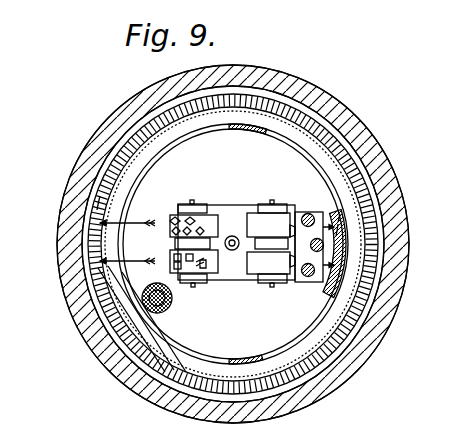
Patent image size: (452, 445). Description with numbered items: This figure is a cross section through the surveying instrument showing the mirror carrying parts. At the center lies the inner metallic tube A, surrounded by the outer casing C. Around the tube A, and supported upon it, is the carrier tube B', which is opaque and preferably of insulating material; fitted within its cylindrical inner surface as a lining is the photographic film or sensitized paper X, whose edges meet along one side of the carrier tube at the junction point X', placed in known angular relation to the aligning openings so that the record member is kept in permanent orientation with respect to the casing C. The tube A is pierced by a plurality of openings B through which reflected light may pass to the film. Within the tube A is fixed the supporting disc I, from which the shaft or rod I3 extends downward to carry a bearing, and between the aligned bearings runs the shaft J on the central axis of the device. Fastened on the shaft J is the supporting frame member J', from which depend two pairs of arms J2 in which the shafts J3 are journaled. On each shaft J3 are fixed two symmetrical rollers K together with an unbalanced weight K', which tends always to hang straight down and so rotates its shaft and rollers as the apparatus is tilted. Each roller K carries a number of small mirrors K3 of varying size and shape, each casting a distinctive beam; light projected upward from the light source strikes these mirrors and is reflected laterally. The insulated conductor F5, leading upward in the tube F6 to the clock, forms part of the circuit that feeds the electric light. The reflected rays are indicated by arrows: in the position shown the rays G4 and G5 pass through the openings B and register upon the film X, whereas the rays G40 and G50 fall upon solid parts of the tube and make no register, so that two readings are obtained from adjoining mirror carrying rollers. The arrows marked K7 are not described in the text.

The tube A is at (268, 132).
The junction point X' is at (233, 218).
The openings B is at (251, 245).
The outer casing C is at (348, 118).
The tube B' is at (248, 242).
The photographic film X is at (260, 244).
The ray G4 is at (451, 247).
The ray G40 is at (340, 272).
The ray G50 is at (345, 238).
The shaft I3 is at (343, 213).
The supporting disc I is at (295, 328).
The ray G5 is at (103, 200).
The arrows K7 is at (168, 228).
The insulated conductor F5 is at (150, 305).
The tube F6 is at (160, 312).
The rollers K is at (236, 243).
The mirrors K3 is at (178, 214).
The arms J2 is at (184, 204).
The shafts J3 is at (195, 204).
The supporting frame member J' is at (225, 201).
The shaft J is at (266, 210).
The weight K' is at (231, 283).